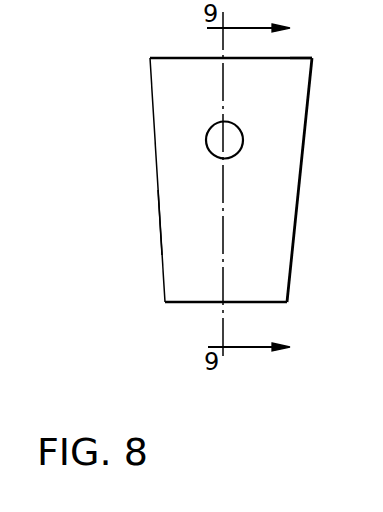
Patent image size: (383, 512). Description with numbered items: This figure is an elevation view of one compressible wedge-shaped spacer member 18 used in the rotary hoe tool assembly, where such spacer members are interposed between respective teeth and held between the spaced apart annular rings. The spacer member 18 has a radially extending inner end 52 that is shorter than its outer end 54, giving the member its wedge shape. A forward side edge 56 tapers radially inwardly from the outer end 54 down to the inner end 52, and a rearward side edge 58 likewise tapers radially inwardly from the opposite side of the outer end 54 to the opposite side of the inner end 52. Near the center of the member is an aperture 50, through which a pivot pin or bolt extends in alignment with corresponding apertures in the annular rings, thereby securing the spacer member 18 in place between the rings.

The compressible wedge-shaped spacer member 18 is at (158, 191).
The aperture 50 is at (206, 141).
The inner end 52 is at (180, 303).
The outer end 54 is at (290, 58).
The forward side edge 56 is at (300, 183).
The rearward side edge 58 is at (160, 230).